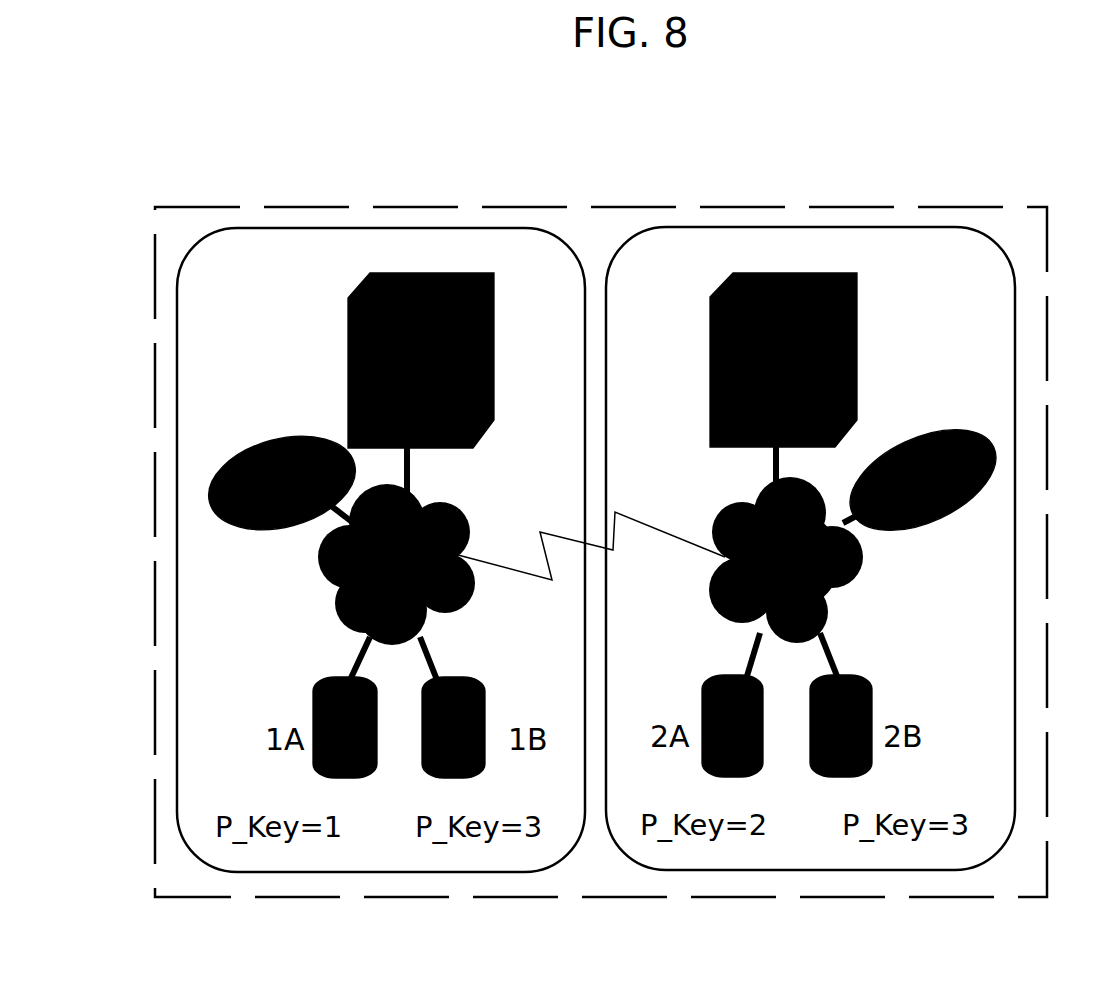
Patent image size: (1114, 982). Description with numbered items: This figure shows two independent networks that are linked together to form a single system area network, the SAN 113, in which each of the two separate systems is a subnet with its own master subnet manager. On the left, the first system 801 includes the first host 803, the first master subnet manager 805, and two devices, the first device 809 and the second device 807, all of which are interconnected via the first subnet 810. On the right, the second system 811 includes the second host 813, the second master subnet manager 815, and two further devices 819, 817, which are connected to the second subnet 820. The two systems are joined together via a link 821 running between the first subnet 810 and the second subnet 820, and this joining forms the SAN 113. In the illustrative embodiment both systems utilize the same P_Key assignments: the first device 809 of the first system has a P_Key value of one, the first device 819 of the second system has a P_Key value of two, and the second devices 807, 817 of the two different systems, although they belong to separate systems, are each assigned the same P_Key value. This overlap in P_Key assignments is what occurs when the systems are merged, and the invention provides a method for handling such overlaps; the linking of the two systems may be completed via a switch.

The SAN 113 is at (1013, 207).
The System 1 801 is at (485, 228).
The System 2 811 is at (895, 228).
The Host1 803 is at (494, 297).
The Host2 813 is at (847, 270).
The Master Subnet Manager SM1 805 is at (280, 440).
The Master Subnet Manager SM2 815 is at (947, 436).
The subnet 810 is at (462, 508).
The subnet 820 is at (720, 513).
The device 1B 807 is at (477, 688).
The device 1A 809 is at (318, 688).
The device 2B 817 is at (857, 672).
The device 2A 819 is at (727, 675).
The link 821 is at (563, 535).